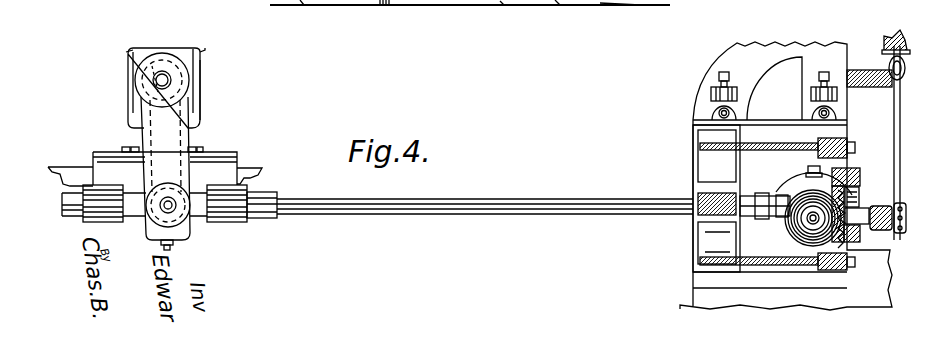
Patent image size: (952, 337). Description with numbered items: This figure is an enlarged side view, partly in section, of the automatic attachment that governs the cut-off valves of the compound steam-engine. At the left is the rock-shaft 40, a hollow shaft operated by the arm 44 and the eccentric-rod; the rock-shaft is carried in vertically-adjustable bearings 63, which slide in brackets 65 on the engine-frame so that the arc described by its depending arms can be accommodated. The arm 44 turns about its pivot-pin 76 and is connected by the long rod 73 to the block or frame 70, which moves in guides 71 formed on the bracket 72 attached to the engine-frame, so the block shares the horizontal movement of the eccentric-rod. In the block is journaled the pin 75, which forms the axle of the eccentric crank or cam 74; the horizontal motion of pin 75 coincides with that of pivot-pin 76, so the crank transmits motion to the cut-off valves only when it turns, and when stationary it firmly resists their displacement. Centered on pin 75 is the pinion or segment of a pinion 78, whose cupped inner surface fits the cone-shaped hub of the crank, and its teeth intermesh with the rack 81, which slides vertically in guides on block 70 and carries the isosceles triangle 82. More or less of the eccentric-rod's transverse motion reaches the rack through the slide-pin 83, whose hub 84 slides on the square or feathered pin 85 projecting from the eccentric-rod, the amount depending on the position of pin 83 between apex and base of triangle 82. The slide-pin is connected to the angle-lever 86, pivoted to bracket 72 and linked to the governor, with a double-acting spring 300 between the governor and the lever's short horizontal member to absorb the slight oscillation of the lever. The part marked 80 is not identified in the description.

The rock-shaft 40 is at (151, 92).
The arm 44 is at (162, 151).
The vertically-adjustable bearings 63 is at (185, 55).
The brackets 65 is at (200, 108).
The block or frame 70 is at (716, 198).
The guides 71 is at (752, 129).
The bracket 72 is at (786, 176).
The rod 73 is at (465, 205).
The eccentric crank or cam 74 is at (807, 186).
The pin 75 is at (790, 200).
The pivot-pin 76 is at (172, 209).
The pinion or segment of a pinion 78 is at (815, 228).
The collar 80 is at (762, 200).
The rack 81 is at (845, 176).
The isosceles triangle 82 is at (860, 197).
The slide-pin 83 is at (857, 216).
The hub 84 is at (893, 212).
The square or feathered pin 85 is at (886, 228).
The angle-lever 86 is at (899, 123).
The double-acting spring 300 is at (914, 40).